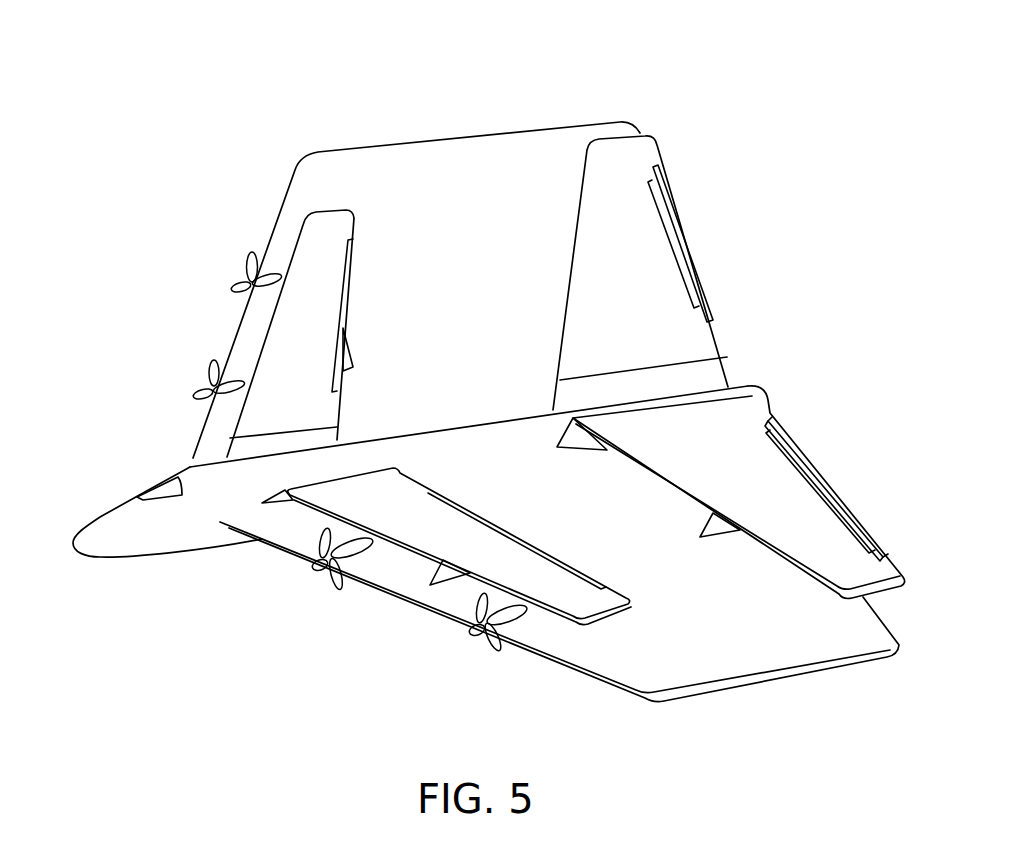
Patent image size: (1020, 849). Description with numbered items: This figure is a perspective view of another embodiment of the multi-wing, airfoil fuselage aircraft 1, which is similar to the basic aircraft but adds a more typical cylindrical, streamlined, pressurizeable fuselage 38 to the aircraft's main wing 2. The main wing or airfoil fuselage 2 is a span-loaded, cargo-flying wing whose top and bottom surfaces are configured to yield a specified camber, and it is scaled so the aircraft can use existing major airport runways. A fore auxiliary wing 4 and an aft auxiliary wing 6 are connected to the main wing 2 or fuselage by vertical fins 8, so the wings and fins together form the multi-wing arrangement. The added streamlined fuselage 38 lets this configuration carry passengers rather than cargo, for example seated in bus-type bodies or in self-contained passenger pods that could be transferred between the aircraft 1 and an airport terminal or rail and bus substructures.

The multi-wing, airfoil fuselage aircraft 1 is at (485, 46).
The main wing or airfoil fuselage 2 is at (553, 143).
The fore auxiliary wing 4 is at (323, 224).
The aft auxiliary wing 6 is at (657, 253).
The vertical fins 8 is at (720, 527).
The cylindrical, streamlined, pressurizeable fuselage 38 is at (180, 533).